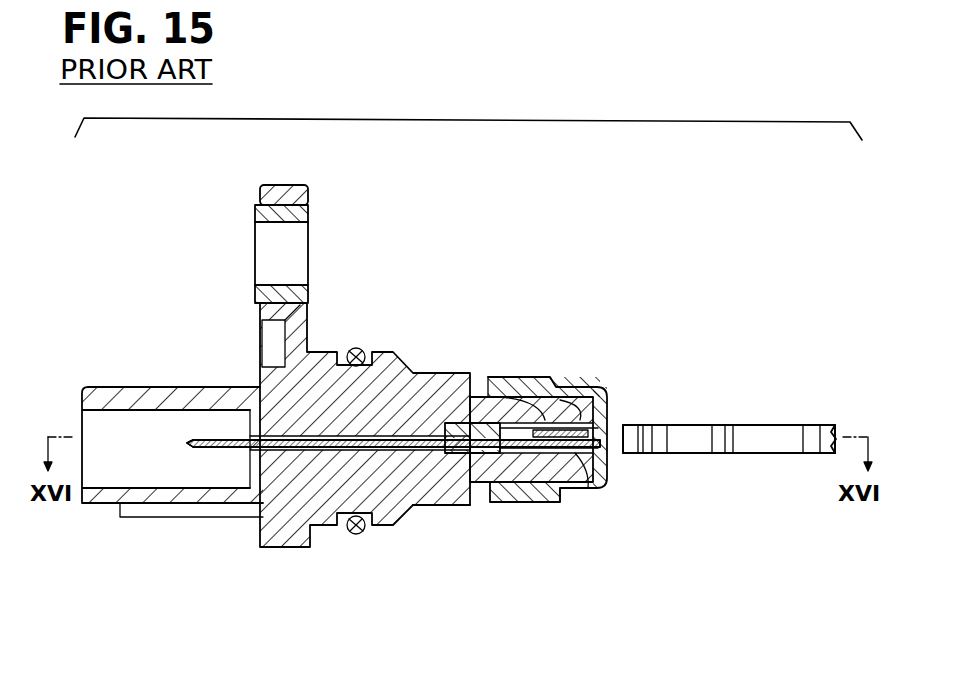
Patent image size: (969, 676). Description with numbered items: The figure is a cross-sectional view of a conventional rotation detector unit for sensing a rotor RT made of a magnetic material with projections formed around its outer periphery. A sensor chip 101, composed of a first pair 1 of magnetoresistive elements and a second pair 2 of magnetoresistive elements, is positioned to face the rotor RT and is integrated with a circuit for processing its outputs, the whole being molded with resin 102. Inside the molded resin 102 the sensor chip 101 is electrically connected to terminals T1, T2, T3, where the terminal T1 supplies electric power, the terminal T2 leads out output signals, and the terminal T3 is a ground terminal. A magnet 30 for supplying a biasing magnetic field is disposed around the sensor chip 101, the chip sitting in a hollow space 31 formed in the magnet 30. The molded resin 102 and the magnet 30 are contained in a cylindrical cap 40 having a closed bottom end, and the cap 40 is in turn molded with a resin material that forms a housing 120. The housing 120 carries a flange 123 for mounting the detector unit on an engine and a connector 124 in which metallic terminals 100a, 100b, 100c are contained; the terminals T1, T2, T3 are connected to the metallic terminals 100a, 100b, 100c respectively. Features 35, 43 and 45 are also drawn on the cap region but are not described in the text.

The housing 120 is at (413, 363).
The flange 123 is at (283, 194).
The connector 124 is at (103, 392).
The metallic terminal 100a is at (222, 447).
The metallic terminal 100b is at (393, 509).
The metallic terminal 100c is at (393, 509).
The molded resin 102 is at (461, 448).
The magnet 30 is at (527, 470).
The cylindrical cap 40 is at (610, 484).
The inner tube 35 is at (607, 403).
The holder 43 is at (597, 397).
The hollow space 31 is at (521, 412).
The sensor chip 101 is at (553, 420).
The end wall 45 is at (591, 455).
The pair of magnetoresistive elements 1 is at (607, 421).
The pair of magnetoresistive elements 2 is at (729, 425).
The rotor RT is at (783, 425).
The terminal T1 is at (447, 504).
The terminal T2 is at (447, 545).
The terminal T3 is at (469, 545).